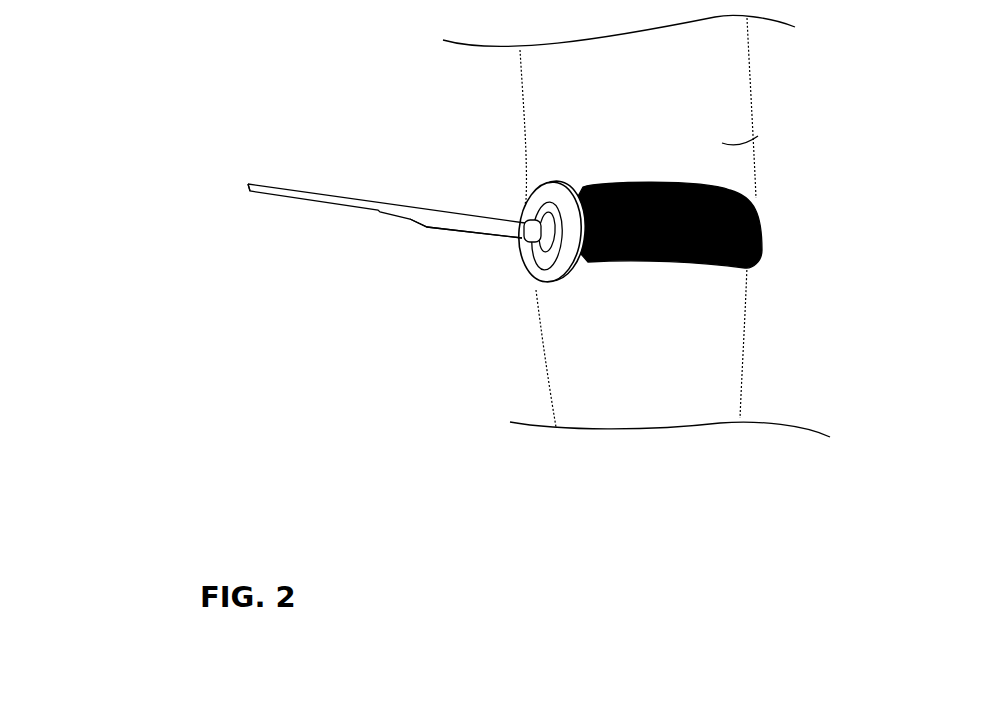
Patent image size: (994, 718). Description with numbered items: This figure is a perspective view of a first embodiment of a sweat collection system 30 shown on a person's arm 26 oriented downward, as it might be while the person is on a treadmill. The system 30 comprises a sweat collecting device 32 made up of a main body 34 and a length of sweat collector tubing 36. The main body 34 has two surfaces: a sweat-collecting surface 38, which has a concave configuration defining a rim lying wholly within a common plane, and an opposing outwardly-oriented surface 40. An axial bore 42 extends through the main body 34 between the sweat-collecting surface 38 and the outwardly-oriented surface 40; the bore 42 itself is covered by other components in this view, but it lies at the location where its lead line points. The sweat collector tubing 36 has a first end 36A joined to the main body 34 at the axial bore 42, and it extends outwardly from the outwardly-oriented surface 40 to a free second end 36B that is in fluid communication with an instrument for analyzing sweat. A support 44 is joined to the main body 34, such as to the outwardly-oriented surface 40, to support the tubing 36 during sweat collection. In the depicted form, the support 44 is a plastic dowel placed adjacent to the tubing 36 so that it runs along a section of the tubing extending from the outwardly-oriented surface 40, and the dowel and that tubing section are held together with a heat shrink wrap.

The limb of user 26 is at (754, 139).
The sweat collection system 30 is at (430, 296).
The sweat collecting device 32 is at (577, 314).
The main body 34 is at (545, 290).
The sweat collector tubing 36 is at (313, 205).
The first end 36A is at (555, 213).
The second end 36B is at (245, 186).
The sweat-collecting surface 38 is at (589, 257).
The outwardly-oriented surface 40 is at (532, 205).
The axial bore 42 is at (583, 187).
The support 44 is at (477, 227).